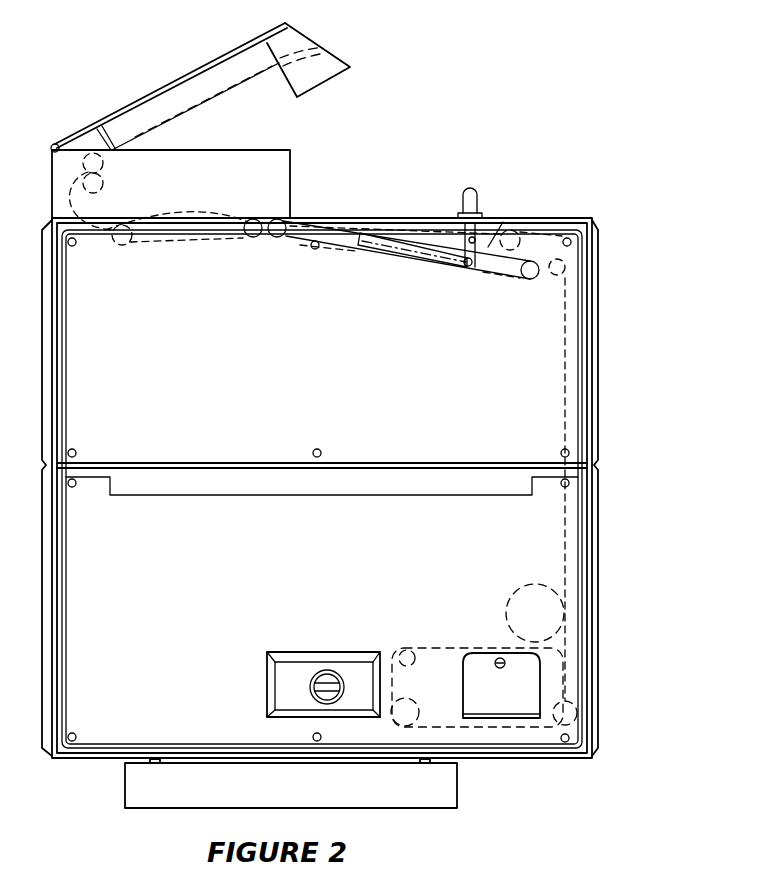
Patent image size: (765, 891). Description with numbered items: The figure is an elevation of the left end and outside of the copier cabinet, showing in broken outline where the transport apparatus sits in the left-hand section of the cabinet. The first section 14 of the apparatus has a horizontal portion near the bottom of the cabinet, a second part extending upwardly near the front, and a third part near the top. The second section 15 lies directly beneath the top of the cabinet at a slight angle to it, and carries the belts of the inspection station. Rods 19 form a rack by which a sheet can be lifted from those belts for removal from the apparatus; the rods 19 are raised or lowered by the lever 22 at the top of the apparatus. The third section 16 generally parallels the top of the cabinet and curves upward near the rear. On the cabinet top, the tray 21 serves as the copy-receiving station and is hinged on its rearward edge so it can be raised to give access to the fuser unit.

The first section 14 is at (458, 647).
The second section 15 is at (425, 263).
The third section 16 is at (177, 242).
The rods 19 is at (387, 250).
The tray 21 is at (158, 90).
The lever 22 is at (480, 202).